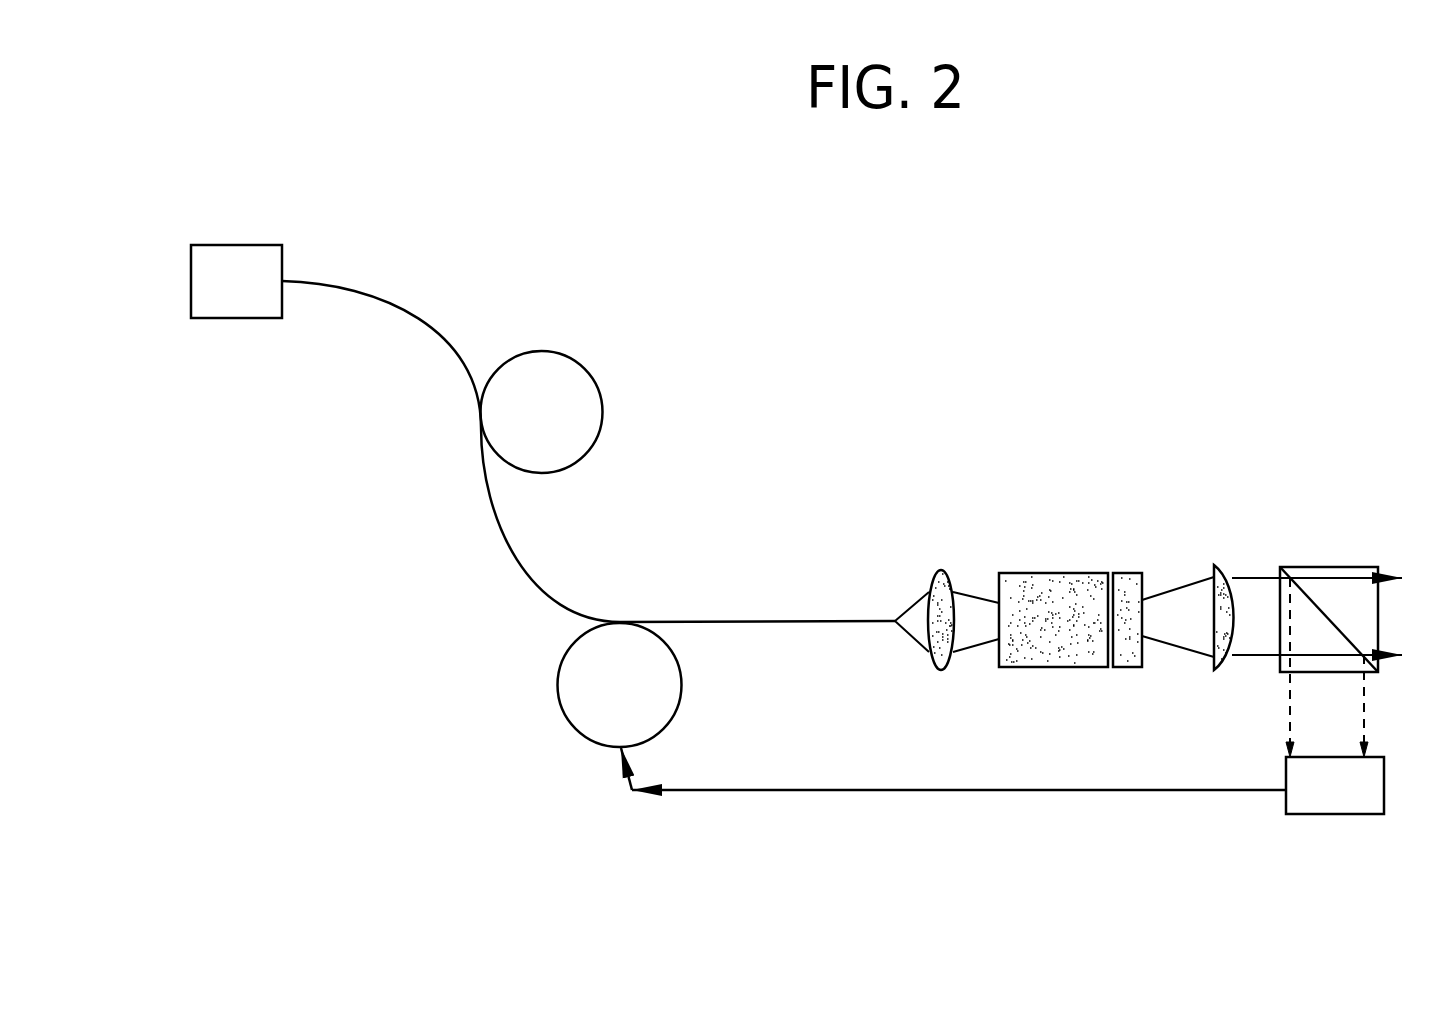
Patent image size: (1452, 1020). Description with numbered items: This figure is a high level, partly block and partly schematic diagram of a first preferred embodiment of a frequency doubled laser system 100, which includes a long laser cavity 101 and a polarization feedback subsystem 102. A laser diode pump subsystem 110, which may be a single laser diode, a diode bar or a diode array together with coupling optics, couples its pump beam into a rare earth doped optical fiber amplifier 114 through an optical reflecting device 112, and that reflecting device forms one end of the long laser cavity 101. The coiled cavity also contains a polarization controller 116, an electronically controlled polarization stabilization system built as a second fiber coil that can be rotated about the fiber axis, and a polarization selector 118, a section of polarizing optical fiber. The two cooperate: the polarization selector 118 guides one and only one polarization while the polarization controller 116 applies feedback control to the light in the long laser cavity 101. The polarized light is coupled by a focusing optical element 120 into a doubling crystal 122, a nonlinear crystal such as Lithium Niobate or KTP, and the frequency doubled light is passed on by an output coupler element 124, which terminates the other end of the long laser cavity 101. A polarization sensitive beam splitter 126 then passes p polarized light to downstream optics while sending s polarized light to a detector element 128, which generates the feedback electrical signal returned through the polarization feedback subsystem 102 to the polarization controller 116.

The frequency doubled laser system 100 is at (396, 187).
The long laser cavity 101 is at (500, 635).
The polarization feedback subsystem 102 is at (875, 800).
The laser diode pump subsystem 110 is at (227, 293).
The optical reflecting device 112 is at (375, 277).
The rare earth doped optical fiber amplifier 114 is at (583, 402).
The polarization controller 116 is at (595, 680).
The polarization selector 118 is at (770, 625).
The focusing optical element 120 is at (941, 672).
The doubling crystal 122 is at (1053, 667).
The output coupler element 124 is at (1222, 668).
The polarization sensitive beam splitter 126 is at (1325, 558).
The detector element 128 is at (1305, 814).